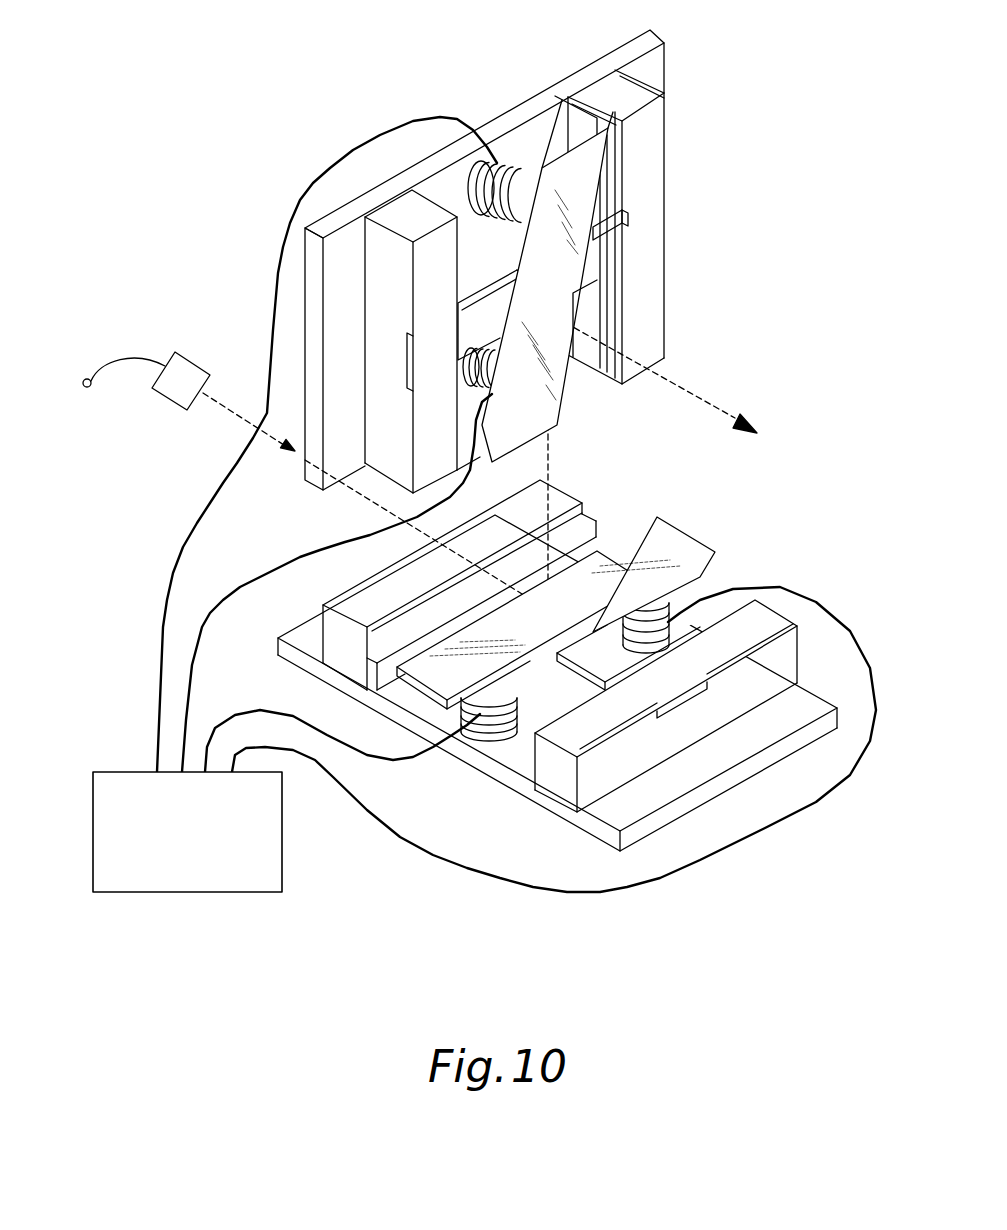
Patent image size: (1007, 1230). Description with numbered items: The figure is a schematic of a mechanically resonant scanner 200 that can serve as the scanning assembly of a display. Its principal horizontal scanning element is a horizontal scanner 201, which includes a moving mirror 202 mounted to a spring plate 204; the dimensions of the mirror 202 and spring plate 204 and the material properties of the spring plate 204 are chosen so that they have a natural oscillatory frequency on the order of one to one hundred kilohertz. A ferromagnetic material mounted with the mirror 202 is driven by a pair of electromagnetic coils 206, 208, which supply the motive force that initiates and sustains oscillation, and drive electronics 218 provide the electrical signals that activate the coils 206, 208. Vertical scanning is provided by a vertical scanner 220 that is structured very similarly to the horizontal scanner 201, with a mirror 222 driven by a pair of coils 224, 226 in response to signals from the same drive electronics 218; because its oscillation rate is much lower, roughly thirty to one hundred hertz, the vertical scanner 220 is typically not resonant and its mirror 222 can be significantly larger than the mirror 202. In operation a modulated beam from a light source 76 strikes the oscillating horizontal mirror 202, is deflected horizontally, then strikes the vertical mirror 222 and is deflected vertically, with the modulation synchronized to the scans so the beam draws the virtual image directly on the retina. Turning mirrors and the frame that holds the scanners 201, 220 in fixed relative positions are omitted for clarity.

The mechanically resonant scanner 200 is at (232, 122).
The horizontal scanner 201 is at (888, 750).
The moving mirror 202 is at (450, 672).
The spring plate 204 is at (608, 647).
The electromagnetic coil 206 is at (513, 735).
The electromagnetic coil 208 is at (668, 616).
The drive electronics 218 is at (282, 873).
The vertical scanner 220 is at (698, 330).
The mirror 222 is at (557, 375).
The coil 224 is at (525, 166).
The coil 226 is at (462, 358).
The light source 76 is at (167, 406).